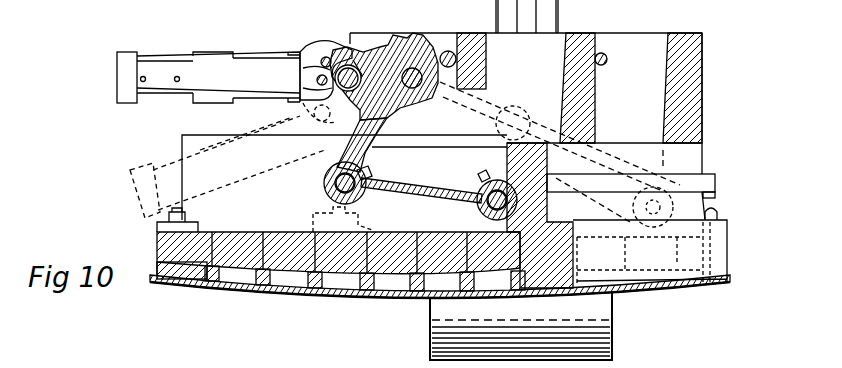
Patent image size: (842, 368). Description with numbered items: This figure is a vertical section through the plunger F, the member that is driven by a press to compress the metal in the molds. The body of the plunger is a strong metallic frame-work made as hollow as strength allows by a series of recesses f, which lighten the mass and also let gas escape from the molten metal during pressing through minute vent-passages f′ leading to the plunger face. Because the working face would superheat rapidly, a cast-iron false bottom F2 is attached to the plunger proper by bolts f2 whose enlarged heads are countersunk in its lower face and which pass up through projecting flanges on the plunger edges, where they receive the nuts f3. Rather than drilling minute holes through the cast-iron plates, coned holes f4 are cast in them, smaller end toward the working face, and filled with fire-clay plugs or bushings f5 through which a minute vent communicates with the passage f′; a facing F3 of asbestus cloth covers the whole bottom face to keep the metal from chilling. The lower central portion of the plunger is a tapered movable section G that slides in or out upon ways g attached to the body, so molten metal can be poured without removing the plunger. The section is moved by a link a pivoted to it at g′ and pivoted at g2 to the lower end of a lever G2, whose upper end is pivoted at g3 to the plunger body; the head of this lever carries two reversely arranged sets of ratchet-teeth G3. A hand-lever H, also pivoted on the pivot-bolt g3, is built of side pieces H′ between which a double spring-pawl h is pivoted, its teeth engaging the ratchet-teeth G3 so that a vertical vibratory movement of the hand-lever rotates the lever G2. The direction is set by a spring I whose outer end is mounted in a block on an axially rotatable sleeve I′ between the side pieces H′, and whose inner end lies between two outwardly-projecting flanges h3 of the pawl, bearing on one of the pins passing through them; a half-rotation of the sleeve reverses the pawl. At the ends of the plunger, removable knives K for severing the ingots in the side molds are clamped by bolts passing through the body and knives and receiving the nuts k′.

The hand-lever H is at (218, 62).
The side pieces of the hand-lever H′ is at (185, 77).
The sleeve I′ is at (207, 57).
The spring I is at (302, 55).
The spring-pawl h is at (353, 48).
The outwardly-projecting flanges of the pawl h3 is at (326, 57).
The ratchet-teeth G3 is at (407, 37).
The pivot-bolt g3 is at (385, 125).
The lever G2 is at (372, 165).
The pivot g2 is at (330, 191).
The connecting link a is at (447, 194).
The pivot g′ is at (495, 186).
The movable section G is at (318, 174).
The plunger F is at (704, 100).
The recesses f is at (650, 85).
The ways g is at (703, 183).
The nuts f3 is at (718, 210).
The bolts f2 is at (703, 247).
The facing F3 is at (185, 287).
The vent-passages f′ is at (213, 237).
The coned holes f4 is at (250, 290).
The plugs or bushings f5 is at (277, 290).
The false bottom F2 is at (392, 284).
The knives K is at (612, 318).
The nuts k′ is at (547, 344).